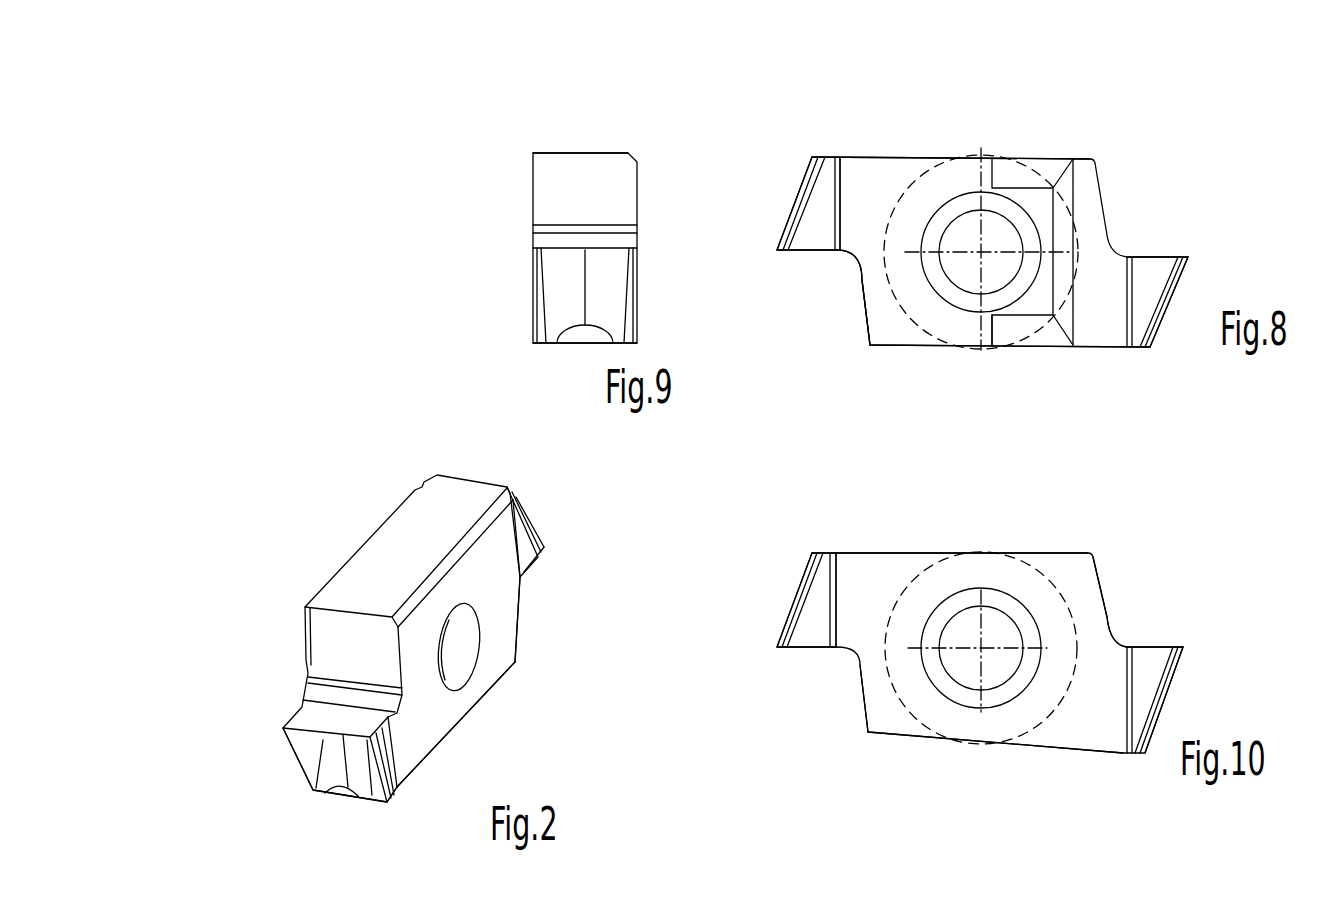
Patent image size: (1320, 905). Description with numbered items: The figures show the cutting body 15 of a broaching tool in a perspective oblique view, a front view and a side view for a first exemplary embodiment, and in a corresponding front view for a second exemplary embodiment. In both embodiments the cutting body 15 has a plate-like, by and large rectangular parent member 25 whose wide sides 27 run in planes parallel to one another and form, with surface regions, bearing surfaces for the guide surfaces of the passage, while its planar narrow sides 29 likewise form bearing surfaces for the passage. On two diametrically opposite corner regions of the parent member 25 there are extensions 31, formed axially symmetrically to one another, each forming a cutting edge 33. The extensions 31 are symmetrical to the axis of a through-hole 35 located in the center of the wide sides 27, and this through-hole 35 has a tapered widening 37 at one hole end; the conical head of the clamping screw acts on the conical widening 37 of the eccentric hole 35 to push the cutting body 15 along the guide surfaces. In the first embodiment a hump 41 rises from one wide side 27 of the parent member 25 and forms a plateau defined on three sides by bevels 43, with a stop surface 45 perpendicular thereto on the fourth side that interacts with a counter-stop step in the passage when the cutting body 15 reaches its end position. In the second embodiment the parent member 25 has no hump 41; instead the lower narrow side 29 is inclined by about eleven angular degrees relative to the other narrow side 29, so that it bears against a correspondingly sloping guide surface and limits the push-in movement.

In FIG. 9, the cutting body 15 is at (490, 198).
In FIG. 8, the cutting body 15 is at (855, 130).
In FIG. 10, the cutting body 15 is at (1190, 562).
In FIG. 2, the cutting body 15 is at (305, 490).
In FIG. 8, the parent member 25 is at (858, 280).
In FIG. 10, the parent member 25 is at (1108, 617).
In FIG. 2, the parent member 25 is at (332, 638).
In FIG. 9, the wide sides 27 is at (533, 222).
In FIG. 8, the wide sides 27 is at (878, 178).
In FIG. 10, the wide sides 27 is at (875, 575).
In FIG. 2, the wide sides 27 is at (492, 617).
In FIG. 9, the narrow sides 29 is at (578, 153).
In FIG. 8, the narrow sides 29 is at (1055, 158).
In FIG. 10, the narrow sides 29 is at (1053, 553).
In FIG. 2, the narrow sides 29 is at (403, 540).
In FIG. 8, the extensions 31 is at (820, 230).
In FIG. 10, the extensions 31 is at (812, 650).
In FIG. 2, the extensions 31 is at (530, 562).
In FIG. 9, the cutting edge 33 is at (610, 248).
In FIG. 8, the cutting edge 33 is at (777, 250).
In FIG. 10, the cutting edge 33 is at (777, 647).
In FIG. 2, the cutting edge 33 is at (542, 551).
In FIG. 8, the through-hole 35 is at (958, 220).
In FIG. 10, the through-hole 35 is at (953, 622).
In FIG. 2, the through-hole 35 is at (451, 644).
In FIG. 8, the tapered widening 37 is at (1013, 288).
In FIG. 10, the tapered widening 37 is at (1003, 688).
In FIG. 8, the hump 41 is at (1040, 210).
In FIG. 8, the bevels 43 is at (1008, 173).
In FIG. 8, the stop surface 45 is at (985, 315).